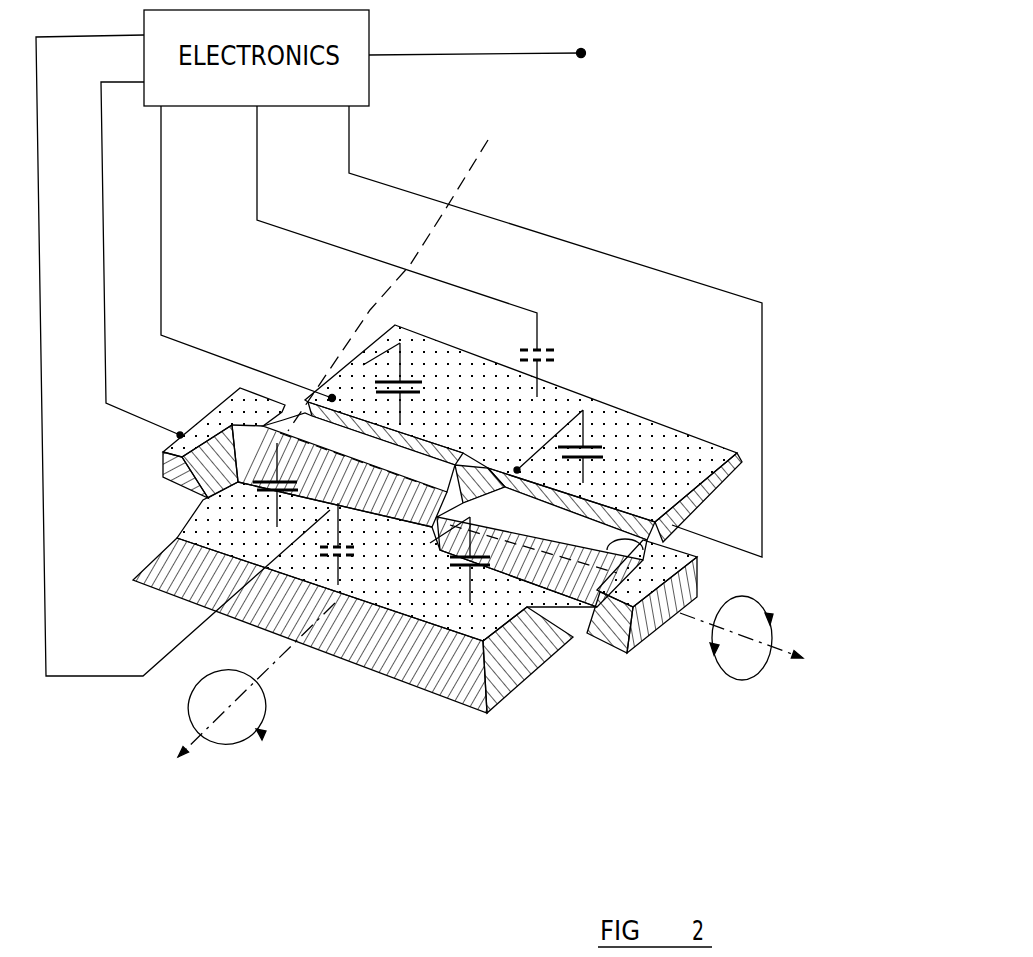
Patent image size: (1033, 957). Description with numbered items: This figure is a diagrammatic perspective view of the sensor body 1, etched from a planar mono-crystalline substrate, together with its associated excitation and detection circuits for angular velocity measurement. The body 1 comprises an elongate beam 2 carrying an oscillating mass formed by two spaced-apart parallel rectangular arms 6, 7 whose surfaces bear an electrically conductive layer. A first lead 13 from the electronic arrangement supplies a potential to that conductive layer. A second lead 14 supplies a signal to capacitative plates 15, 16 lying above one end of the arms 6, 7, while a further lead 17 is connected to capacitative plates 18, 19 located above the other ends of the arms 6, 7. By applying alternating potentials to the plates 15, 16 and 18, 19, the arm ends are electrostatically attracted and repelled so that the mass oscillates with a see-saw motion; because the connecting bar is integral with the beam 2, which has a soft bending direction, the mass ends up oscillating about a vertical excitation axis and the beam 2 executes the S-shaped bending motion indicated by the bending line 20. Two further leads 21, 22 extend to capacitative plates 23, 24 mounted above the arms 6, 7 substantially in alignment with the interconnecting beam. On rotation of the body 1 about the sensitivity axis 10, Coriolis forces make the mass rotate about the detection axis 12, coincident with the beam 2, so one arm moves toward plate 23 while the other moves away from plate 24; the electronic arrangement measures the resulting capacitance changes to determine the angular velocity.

The sensor body 1 is at (600, 392).
The elongate beam 2 is at (665, 550).
The rectangular arm 6 is at (673, 473).
The rectangular arm 7 is at (497, 620).
The sensitivity axis 10 is at (198, 735).
The detection axis 12 is at (775, 648).
The first lead 13 is at (105, 287).
The second lead 14 is at (570, 243).
The capacitative plate 15 is at (455, 610).
The capacitative plate 16 is at (586, 440).
The further lead 17 is at (162, 213).
The capacitative plate 18 is at (258, 490).
The capacitative plate 19 is at (410, 382).
The bending line 20 is at (606, 740).
The further lead 21 is at (320, 240).
The further lead 22 is at (47, 628).
The capacitative plate 23 is at (550, 345).
The capacitative plate 24 is at (350, 558).